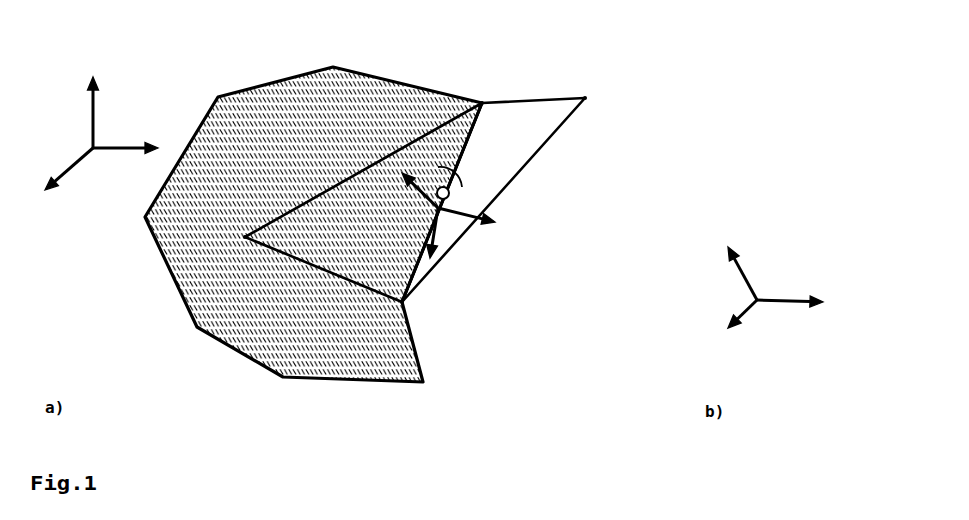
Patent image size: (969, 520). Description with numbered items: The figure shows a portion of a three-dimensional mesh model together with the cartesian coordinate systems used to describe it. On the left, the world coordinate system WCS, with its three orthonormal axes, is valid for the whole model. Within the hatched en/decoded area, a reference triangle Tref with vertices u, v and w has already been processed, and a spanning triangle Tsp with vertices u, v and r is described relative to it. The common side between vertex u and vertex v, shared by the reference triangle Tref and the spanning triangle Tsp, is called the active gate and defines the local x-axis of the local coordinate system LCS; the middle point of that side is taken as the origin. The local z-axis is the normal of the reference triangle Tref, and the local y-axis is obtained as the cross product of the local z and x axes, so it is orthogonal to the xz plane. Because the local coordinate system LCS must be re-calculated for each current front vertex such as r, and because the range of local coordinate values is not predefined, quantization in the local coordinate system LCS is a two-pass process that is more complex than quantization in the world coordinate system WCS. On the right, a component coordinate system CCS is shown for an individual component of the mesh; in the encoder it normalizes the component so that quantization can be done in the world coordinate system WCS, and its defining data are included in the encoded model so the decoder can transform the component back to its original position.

The en/decoded area is at (313, 224).
The reference triangle Tref is at (355, 248).
The spanning triangle Tsp is at (496, 167).
The vertex u is at (488, 93).
The current front vertex r is at (591, 95).
The vertex w is at (235, 225).
The vertex v is at (396, 313).
The local coordinate system LCS is at (455, 213).
The world coordinate system WCS is at (102, 148).
The component coordinate system CCS is at (775, 306).